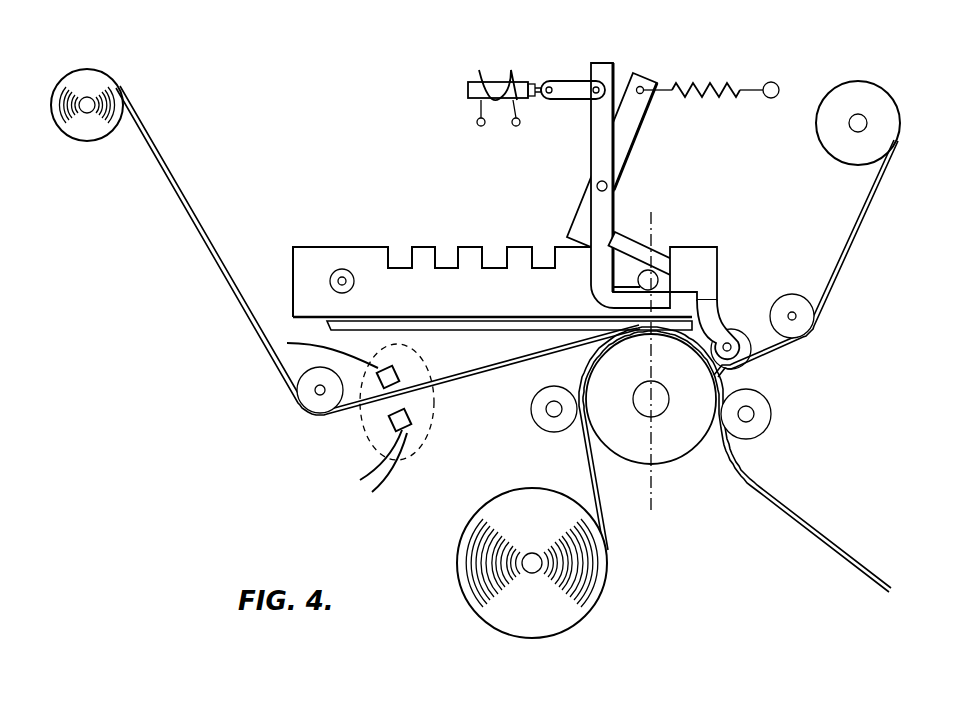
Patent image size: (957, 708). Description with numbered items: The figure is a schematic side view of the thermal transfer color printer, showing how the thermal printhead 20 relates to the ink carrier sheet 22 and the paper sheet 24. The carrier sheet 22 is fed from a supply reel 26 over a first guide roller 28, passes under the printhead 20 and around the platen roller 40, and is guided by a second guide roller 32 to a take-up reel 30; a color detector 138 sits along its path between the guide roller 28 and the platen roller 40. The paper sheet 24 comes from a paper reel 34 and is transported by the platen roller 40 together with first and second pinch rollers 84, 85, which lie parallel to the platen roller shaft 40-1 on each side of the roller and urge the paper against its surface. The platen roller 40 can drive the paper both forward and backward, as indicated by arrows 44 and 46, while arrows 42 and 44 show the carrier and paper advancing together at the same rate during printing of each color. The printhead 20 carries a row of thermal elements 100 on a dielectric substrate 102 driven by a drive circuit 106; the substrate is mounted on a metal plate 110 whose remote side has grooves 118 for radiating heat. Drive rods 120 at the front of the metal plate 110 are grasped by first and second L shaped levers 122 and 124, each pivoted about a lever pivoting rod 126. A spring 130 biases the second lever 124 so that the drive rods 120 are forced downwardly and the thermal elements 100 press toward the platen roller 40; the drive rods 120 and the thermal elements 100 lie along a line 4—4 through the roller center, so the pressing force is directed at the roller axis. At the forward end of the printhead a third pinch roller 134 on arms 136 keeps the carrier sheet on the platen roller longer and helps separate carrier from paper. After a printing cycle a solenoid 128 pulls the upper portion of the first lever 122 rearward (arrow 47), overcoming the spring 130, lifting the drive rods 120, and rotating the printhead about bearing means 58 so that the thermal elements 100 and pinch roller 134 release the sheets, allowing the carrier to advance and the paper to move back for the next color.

The line 4— 4 is at (651, 361).
The thermal printhead 20 is at (304, 247).
The ink carrier sheet 22 is at (838, 288).
The record medium 24 is at (792, 509).
The supply reel 26 is at (102, 95).
The first guide roller 28 is at (306, 387).
The take-up reel 30 is at (867, 123).
The second guide roller 32 is at (810, 331).
The paper reel 34 is at (594, 574).
The platen roller 40 is at (667, 455).
The platen roller shaft 40-1 is at (659, 405).
The arrow 42 is at (857, 270).
The arrow 44 is at (673, 59).
The arrow 46 is at (610, 483).
The arrow 47 is at (486, 58).
The bearing means 58 is at (342, 268).
The first pinch roller 84 is at (764, 424).
The second pinch roller 85 is at (543, 419).
The thermal elements 100 is at (668, 312).
The dielectric substrate 102 is at (316, 321).
The drive circuit 106 is at (471, 331).
The metal plate 110 is at (703, 230).
The grooves 118 is at (443, 262).
The drive rods 120 is at (660, 283).
The first L shaped lever 122 is at (596, 130).
The second L shaped lever 124 is at (628, 137).
The lever pivoting rod 126 is at (597, 186).
The solenoid 128 is at (468, 90).
The spring 130 is at (703, 106).
The third pinch roller 134 is at (750, 367).
The arms 136 is at (760, 344).
The color detector 138 is at (437, 432).